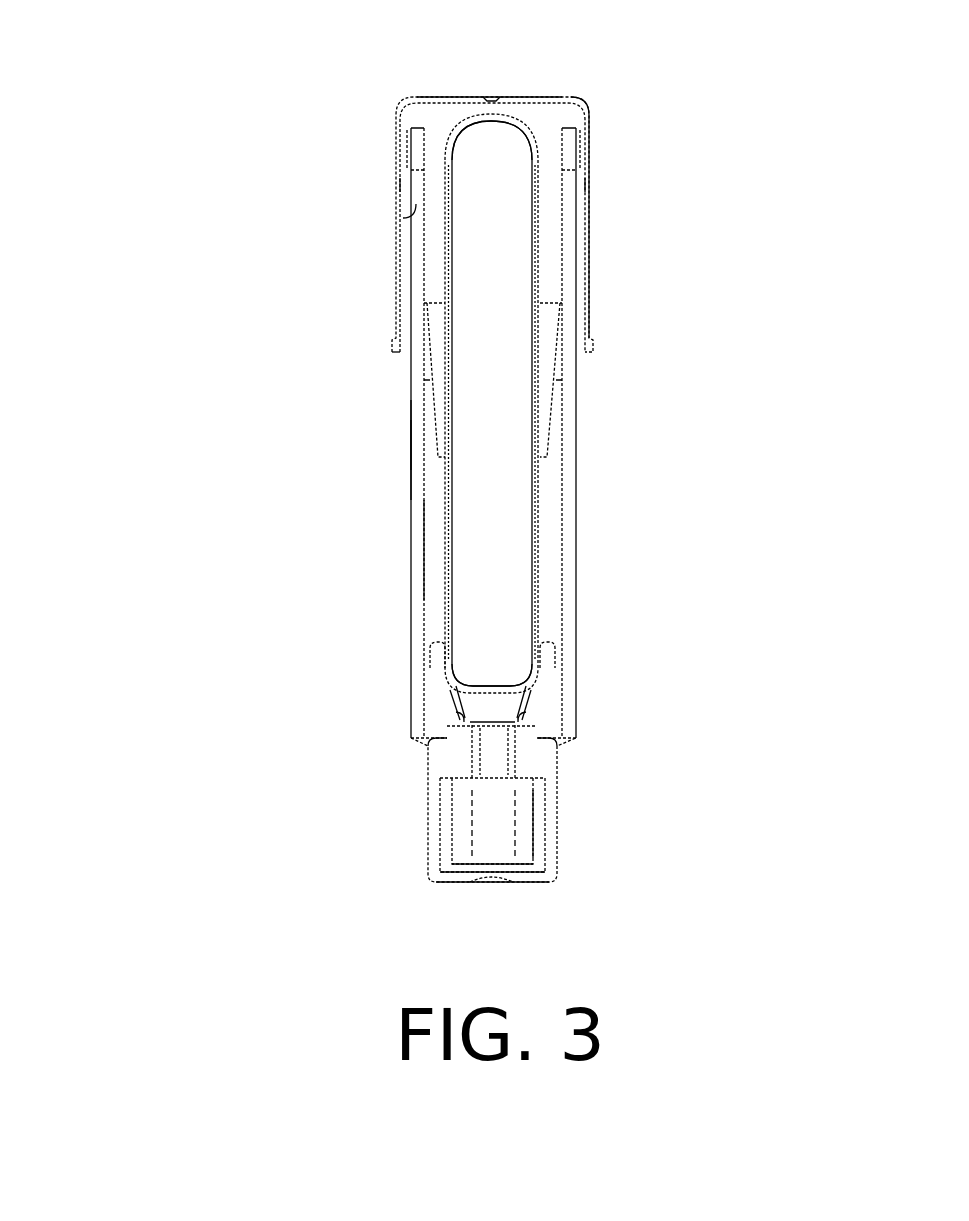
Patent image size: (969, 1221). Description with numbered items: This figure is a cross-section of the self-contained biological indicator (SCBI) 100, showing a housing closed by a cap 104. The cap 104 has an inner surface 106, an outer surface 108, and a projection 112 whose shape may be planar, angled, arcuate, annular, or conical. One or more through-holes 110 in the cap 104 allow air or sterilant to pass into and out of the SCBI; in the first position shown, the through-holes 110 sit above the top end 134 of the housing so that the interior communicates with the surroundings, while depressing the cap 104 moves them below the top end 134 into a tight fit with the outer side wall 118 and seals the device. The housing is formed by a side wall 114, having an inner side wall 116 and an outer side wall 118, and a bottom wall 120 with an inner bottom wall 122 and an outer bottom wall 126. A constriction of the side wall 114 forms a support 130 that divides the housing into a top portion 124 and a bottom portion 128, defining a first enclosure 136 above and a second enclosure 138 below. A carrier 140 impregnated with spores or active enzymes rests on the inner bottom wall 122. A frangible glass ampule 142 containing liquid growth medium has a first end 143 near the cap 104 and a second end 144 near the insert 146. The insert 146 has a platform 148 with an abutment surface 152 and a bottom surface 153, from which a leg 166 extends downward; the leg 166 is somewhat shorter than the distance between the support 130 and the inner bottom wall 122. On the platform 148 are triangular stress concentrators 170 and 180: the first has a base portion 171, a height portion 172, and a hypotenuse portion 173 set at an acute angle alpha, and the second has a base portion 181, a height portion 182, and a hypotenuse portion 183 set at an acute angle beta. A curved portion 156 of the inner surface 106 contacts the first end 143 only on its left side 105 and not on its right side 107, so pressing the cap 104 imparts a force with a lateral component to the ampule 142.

The self-contained biological indicator 100 is at (295, 332).
The cap 104 is at (663, 105).
The left side 105 is at (390, 92).
The inner surface 106 is at (527, 118).
The right side 107 is at (599, 94).
The outer surface 108 is at (590, 285).
The through-holes 110 is at (400, 185).
The projection 112 is at (547, 396).
The side wall 114 is at (417, 492).
The inner side wall 116 is at (423, 533).
The outer side wall 118 is at (408, 452).
The bottom wall 120 is at (463, 883).
The inner bottom wall 122 is at (523, 878).
The top portion 124 is at (600, 542).
The outer bottom wall 126 is at (455, 872).
The bottom portion 128 is at (582, 793).
The support 130 is at (433, 743).
The top end 134 is at (403, 218).
The first enclosure 136 is at (428, 580).
The second enclosure 138 is at (480, 824).
The carrier 140 is at (520, 865).
The frangible glass ampule 142 is at (473, 398).
The first end 143 is at (483, 182).
The second end 144 is at (500, 633).
The insert 146 is at (488, 750).
The platform 148 is at (525, 755).
The abutment surface 152 is at (545, 737).
The bottom surface 153 is at (458, 780).
The curved portion 156 is at (463, 122).
The leg 166 is at (520, 793).
The stress concentrator 170 is at (455, 705).
The base portion 171 is at (460, 722).
The height portion 172 is at (449, 678).
The hypotenuse portion 173 is at (450, 693).
The stress concentrator 180 is at (525, 705).
The base portion 181 is at (520, 722).
The height portion 182 is at (524, 678).
The hypotenuse portion 183 is at (528, 693).